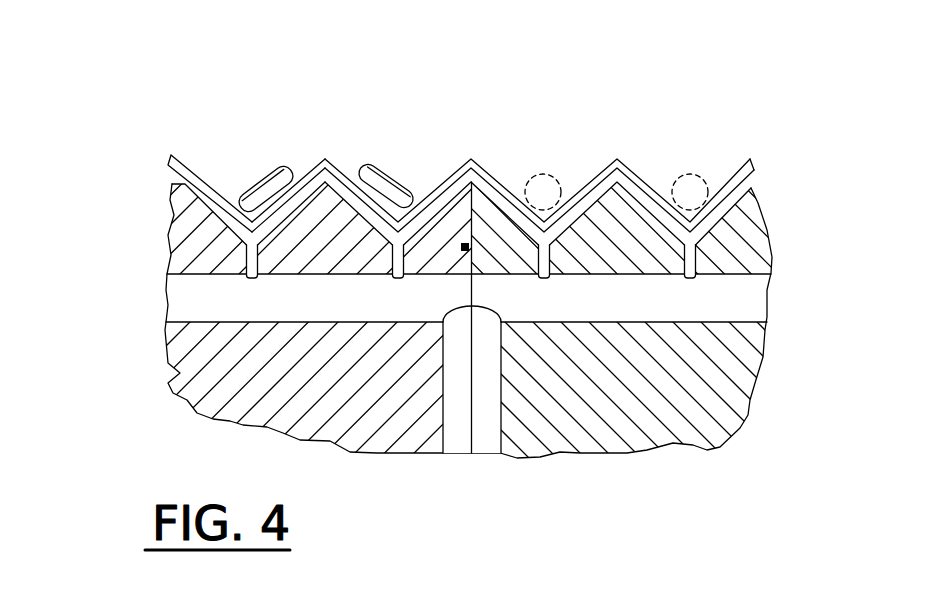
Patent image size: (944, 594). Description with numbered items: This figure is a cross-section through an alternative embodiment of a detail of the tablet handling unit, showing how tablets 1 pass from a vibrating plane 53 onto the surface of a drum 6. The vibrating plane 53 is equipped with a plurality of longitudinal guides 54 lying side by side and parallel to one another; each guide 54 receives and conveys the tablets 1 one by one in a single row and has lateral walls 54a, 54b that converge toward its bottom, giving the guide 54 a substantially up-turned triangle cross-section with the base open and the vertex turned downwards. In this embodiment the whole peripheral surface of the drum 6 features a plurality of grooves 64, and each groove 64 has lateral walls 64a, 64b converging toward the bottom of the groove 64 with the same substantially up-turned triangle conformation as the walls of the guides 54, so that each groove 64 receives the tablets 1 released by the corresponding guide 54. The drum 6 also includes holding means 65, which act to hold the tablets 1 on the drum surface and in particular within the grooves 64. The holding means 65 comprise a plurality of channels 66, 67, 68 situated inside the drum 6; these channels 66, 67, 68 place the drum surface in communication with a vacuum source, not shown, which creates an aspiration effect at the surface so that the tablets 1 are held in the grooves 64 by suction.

The tablet 1 is at (272, 165).
The drum 6 is at (158, 268).
The vibrating plane 53 is at (400, 132).
The longitudinal guide 54 is at (299, 131).
The lateral wall 54a is at (210, 176).
The lateral wall 54b is at (300, 158).
The groove 64 is at (472, 297).
The lateral wall 64a is at (399, 316).
The lateral wall 64b is at (290, 207).
The holding means 65 is at (695, 282).
The channel 66 is at (690, 256).
The channel 67 is at (575, 305).
The channel 68 is at (483, 435).